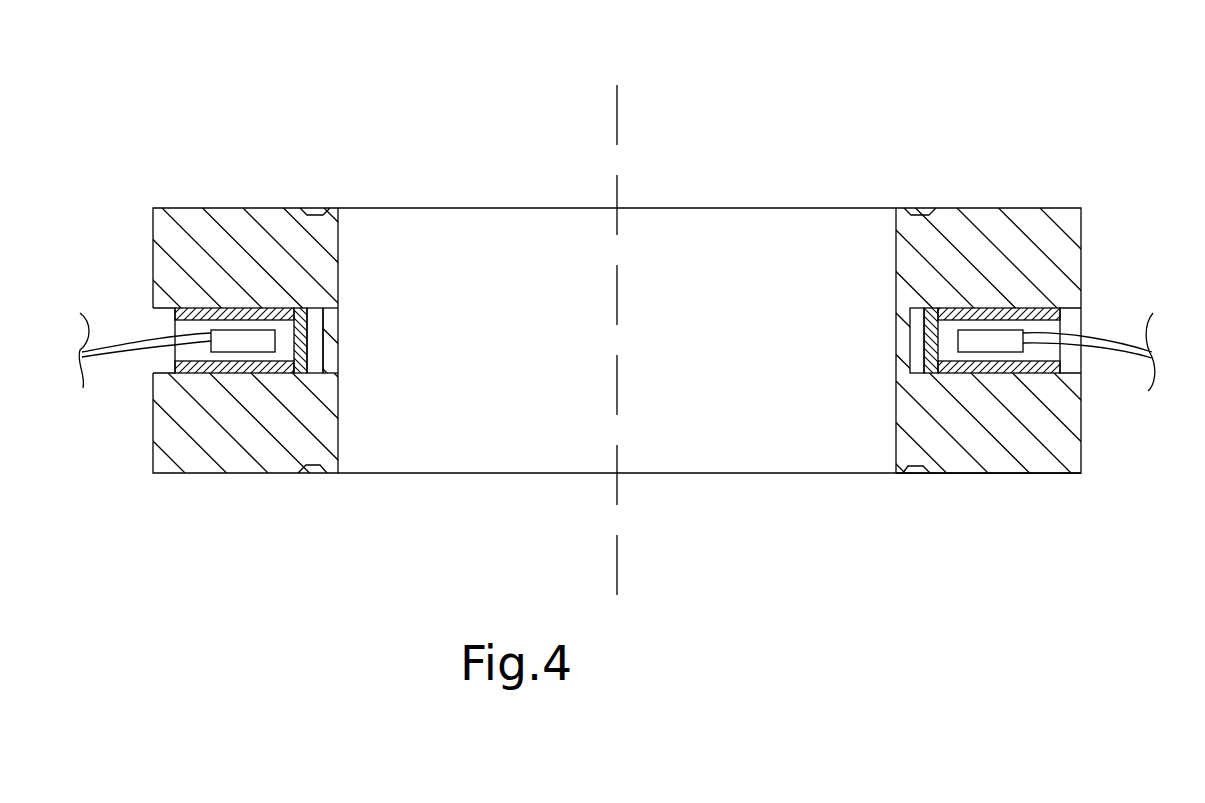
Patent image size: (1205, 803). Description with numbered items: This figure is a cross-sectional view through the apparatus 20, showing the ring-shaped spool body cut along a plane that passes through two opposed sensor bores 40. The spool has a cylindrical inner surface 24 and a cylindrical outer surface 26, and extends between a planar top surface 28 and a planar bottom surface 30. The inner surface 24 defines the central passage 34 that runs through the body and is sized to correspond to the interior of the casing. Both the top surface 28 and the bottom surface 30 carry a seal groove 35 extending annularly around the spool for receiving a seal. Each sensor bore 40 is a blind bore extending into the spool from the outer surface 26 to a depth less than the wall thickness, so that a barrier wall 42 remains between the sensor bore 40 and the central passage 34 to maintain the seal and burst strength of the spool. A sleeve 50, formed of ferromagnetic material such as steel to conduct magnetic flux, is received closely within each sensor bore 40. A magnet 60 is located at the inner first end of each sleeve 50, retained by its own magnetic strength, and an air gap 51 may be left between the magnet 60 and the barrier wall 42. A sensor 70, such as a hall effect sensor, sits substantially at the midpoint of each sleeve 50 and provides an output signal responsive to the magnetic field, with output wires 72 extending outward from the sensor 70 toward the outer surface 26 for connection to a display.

The apparatus 20 is at (977, 122).
The inner surface 24 is at (897, 452).
The outer surface 26 is at (1082, 257).
The top surface 28 is at (618, 102).
The bottom surface 30 is at (1005, 475).
The central passage 34 is at (865, 200).
The seal groove 35 is at (310, 188).
The sensor bore 40 is at (150, 319).
The barrier wall 42 is at (335, 318).
The sleeve 50 is at (230, 370).
The air gap 51 is at (919, 362).
The magnet 60 is at (317, 315).
The sensor 70 is at (228, 333).
The lead wire 72 is at (108, 355).